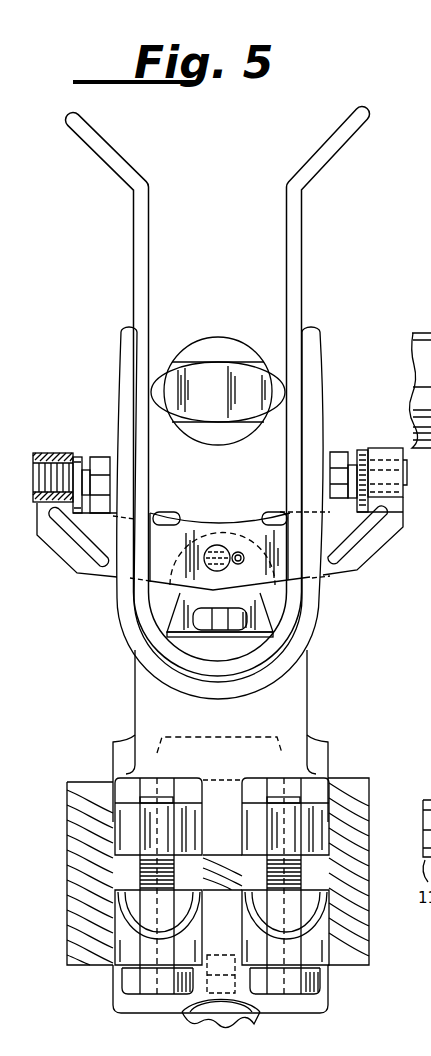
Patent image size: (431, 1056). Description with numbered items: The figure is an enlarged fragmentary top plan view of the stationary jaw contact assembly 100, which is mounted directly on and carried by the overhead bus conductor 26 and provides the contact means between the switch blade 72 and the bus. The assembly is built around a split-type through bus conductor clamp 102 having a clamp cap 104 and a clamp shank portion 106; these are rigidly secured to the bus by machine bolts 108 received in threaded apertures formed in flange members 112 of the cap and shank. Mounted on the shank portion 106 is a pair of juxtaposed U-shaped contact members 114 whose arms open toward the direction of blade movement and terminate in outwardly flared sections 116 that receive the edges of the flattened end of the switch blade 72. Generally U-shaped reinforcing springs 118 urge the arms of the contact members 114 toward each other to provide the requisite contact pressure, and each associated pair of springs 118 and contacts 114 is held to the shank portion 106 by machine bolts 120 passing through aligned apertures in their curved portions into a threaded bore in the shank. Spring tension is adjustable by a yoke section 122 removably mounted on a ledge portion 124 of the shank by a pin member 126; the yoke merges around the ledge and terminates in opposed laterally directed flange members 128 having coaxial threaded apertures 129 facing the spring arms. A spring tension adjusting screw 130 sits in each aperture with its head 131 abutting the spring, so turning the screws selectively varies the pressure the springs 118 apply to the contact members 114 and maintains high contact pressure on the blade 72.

The overhead bus conductor 26 is at (350, 953).
The switch blade 72 is at (232, 447).
The stationary jaw contact assembly 100 is at (312, 265).
The through bus conductor clamp 102 is at (325, 731).
The clamp cap 104 is at (316, 1013).
The clamp shank portion 106 is at (306, 673).
The machine bolts 108 is at (302, 870).
The flange members 112 is at (122, 839).
The U-shaped contact members 114 is at (302, 218).
The outwardly flared sections 116 is at (92, 143).
The U-shaped reinforcing springs 118 is at (322, 365).
The machine bolts 120 is at (222, 620).
The yoke section 122 is at (390, 547).
The ledge portion 124 is at (185, 602).
The pin member 126 is at (223, 545).
The laterally directed flange members 128 is at (60, 453).
The threaded apertures 129 is at (53, 505).
The spring tension adjusting screw 130 is at (34, 460).
The head 131 is at (95, 458).